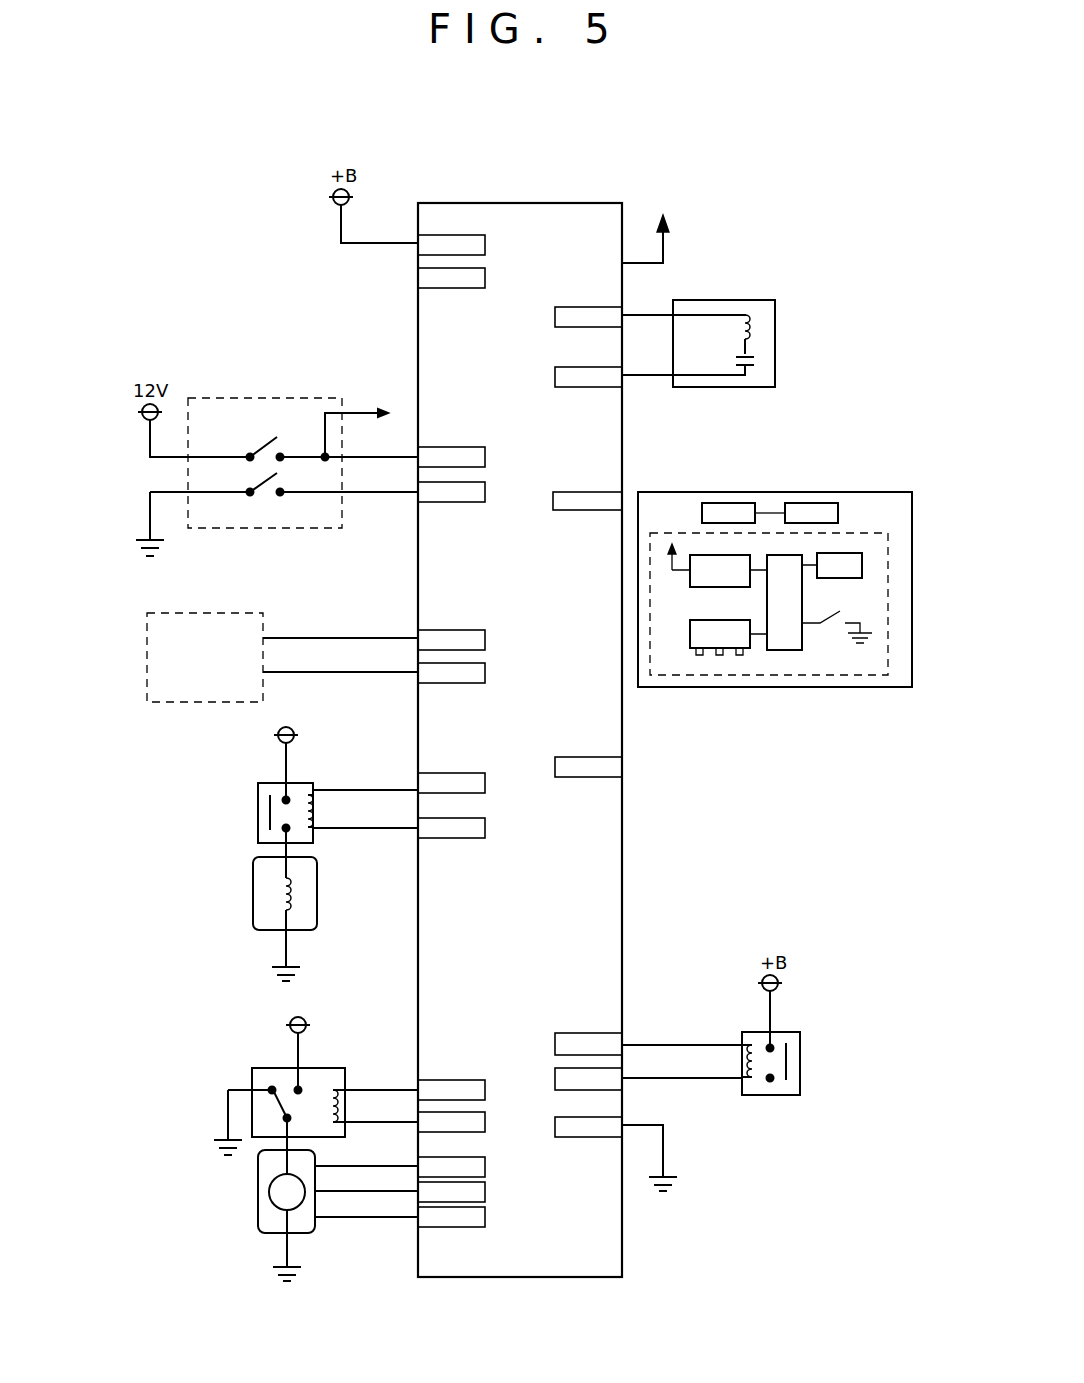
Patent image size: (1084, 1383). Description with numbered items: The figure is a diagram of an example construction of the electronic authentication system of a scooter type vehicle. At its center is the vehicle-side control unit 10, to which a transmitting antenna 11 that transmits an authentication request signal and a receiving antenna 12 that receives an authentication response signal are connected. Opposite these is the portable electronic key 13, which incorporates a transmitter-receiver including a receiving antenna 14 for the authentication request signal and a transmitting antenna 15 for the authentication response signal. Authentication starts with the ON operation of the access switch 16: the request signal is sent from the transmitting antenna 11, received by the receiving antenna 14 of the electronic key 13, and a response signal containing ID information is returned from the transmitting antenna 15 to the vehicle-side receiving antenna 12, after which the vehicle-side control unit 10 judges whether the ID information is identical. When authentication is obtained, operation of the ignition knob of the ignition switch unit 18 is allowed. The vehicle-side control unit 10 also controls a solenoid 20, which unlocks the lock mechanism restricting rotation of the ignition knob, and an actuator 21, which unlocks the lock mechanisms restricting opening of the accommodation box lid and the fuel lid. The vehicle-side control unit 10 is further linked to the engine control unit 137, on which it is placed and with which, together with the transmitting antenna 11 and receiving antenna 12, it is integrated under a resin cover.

The vehicle-side control unit 10 is at (530, 193).
The transmitting antenna 11 is at (745, 300).
The receiving antenna 12 is at (665, 252).
The electronic key 13 is at (803, 492).
The receiving antenna 14 is at (698, 657).
The transmitting antenna 15 is at (712, 587).
The access switch 16 is at (260, 528).
The ignition switch unit 18 is at (308, 530).
The solenoid 20 is at (253, 880).
The actuator 21 is at (258, 1175).
The engine control unit 137 is at (203, 702).